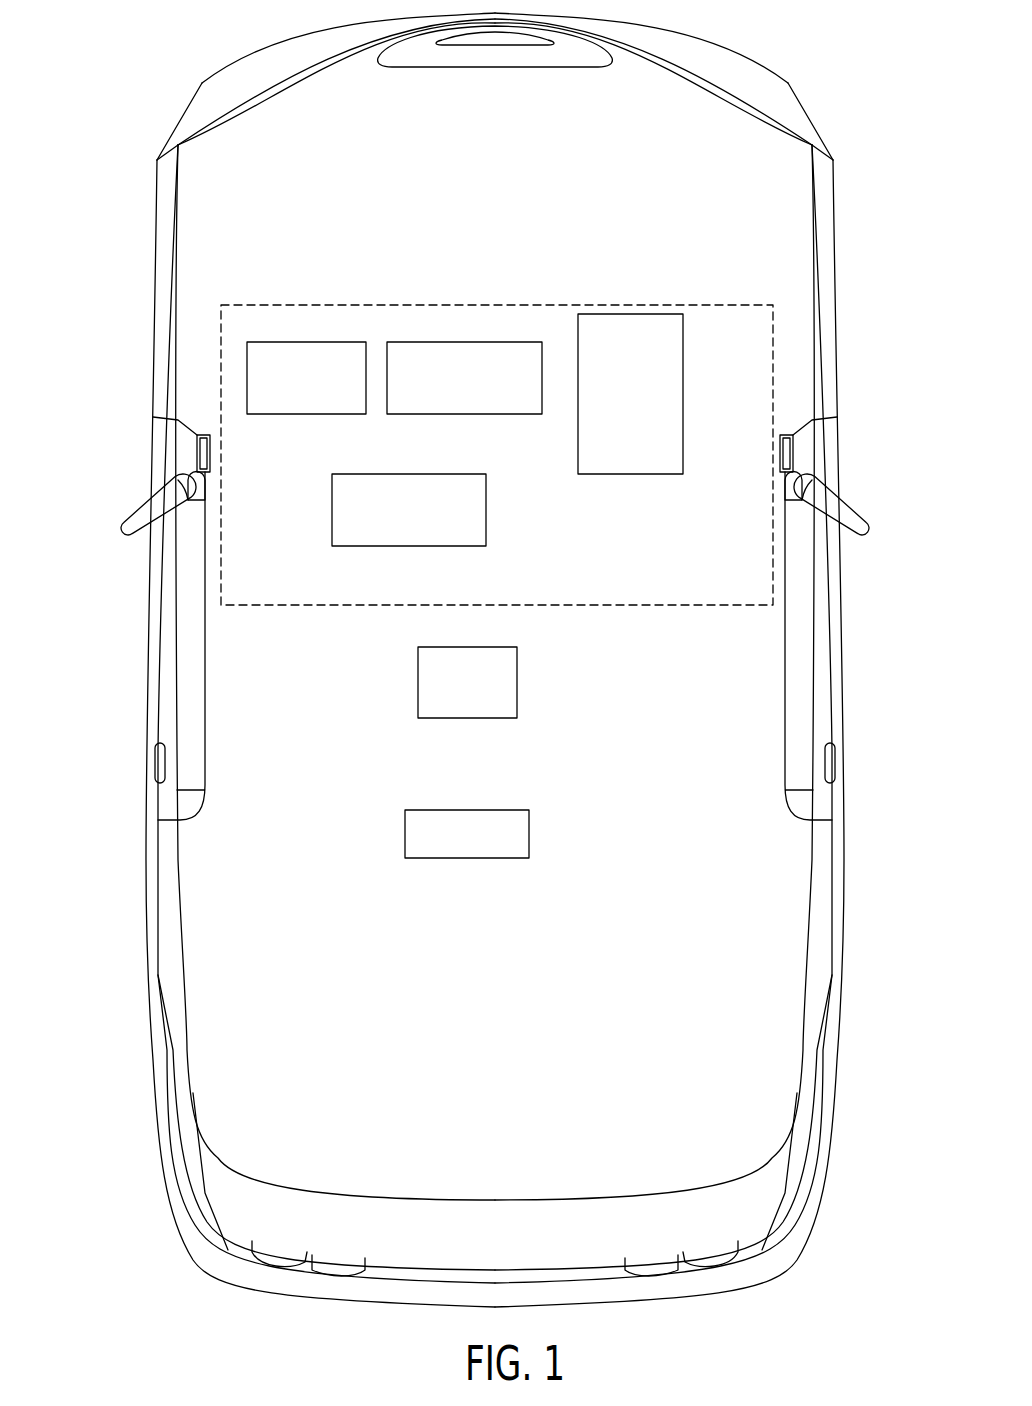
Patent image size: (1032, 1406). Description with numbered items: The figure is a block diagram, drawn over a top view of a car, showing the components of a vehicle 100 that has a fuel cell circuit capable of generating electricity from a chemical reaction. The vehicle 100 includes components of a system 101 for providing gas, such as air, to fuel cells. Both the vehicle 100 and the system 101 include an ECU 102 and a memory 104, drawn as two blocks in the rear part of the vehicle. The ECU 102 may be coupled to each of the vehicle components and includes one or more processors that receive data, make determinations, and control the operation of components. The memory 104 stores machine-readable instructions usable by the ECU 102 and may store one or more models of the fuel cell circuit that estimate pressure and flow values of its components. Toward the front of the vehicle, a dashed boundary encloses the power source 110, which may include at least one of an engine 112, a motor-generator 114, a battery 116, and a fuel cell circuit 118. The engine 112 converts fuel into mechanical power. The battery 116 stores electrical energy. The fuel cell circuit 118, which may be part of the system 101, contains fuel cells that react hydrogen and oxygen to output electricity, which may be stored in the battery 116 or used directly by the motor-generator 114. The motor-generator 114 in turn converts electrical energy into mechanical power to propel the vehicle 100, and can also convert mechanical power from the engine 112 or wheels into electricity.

The vehicle 100 is at (110, 195).
The system 101 is at (110, 310).
The ECU 102 is at (458, 718).
The memory 104 is at (470, 858).
The power source 110 is at (773, 364).
The engine 112 is at (622, 314).
The motor-generator 114 is at (485, 342).
The battery 116 is at (318, 342).
The fuel cell circuit 118 is at (486, 520).